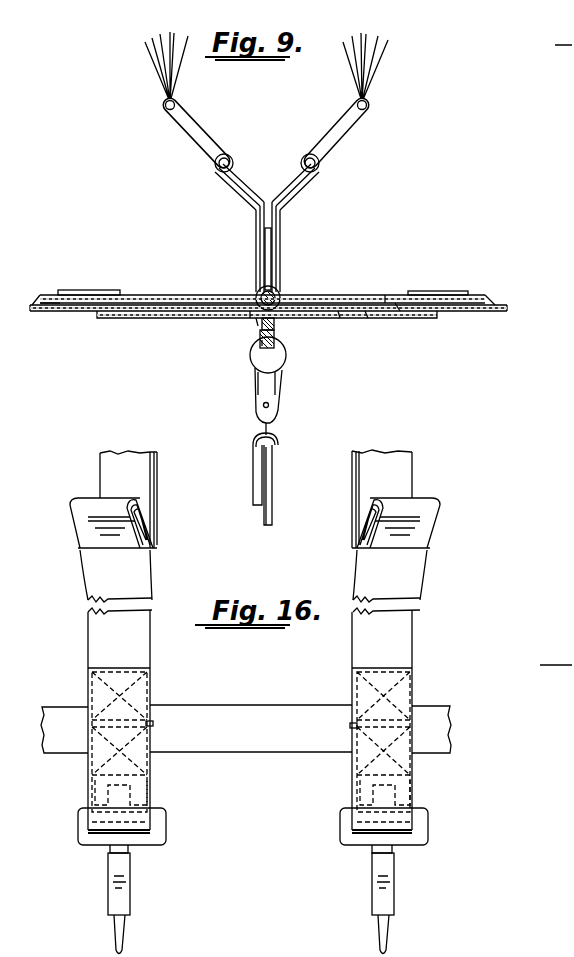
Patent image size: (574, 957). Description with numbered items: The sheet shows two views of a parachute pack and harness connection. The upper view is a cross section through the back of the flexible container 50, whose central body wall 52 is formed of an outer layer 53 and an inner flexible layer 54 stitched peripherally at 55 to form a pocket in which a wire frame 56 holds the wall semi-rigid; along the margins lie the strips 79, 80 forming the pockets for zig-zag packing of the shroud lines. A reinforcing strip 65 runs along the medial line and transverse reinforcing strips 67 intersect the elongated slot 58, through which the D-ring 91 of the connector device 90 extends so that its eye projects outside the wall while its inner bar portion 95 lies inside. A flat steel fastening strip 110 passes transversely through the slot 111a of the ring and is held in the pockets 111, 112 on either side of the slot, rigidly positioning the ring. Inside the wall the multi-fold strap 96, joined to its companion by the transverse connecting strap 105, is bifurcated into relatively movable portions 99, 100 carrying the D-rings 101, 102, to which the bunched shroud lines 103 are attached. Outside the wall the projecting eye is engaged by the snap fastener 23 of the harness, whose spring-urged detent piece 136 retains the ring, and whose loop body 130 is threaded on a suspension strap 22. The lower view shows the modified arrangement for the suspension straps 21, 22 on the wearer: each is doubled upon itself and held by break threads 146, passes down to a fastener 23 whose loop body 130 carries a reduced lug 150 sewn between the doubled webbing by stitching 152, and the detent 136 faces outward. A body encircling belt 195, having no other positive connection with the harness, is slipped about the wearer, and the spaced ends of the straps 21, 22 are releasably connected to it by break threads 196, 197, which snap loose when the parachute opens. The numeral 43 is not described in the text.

In FIG. 9, the shroud lines 103 is at (160, 62).
In FIG. 9, the D-ring 102 is at (197, 135).
In FIG. 9, the D-ring 101 is at (340, 132).
In FIG. 9, the relatively movable portion 100 is at (233, 180).
In FIG. 9, the relatively movable portion 99 is at (305, 178).
In FIG. 9, the multi-fold strap 96 is at (281, 218).
In FIG. 9, the connector device 90 is at (250, 243).
In FIG. 9, the transverse connecting strap 105 is at (272, 256).
In FIG. 9, the inner bar portion 95 is at (278, 292).
In FIG. 9, the strip of flexible material 79 is at (114, 292).
In FIG. 9, the strip of flexible material 80 is at (462, 291).
In FIG. 9, the inner flexible layer 54 is at (362, 295).
In FIG. 9, the flexible container 50 is at (462, 316).
In FIG. 9, the pocket 112 is at (124, 318).
In FIG. 9, the peripheral stitching 55 is at (42, 300).
In FIG. 9, the transverse reinforcing strip 67 is at (390, 300).
In FIG. 9, the wire frame 56 is at (400, 304).
In FIG. 9, the outer layer 53 is at (370, 318).
In FIG. 9, the pocket 111 is at (341, 318).
In FIG. 9, the body wall 52 is at (60, 322).
In FIG. 9, the reinforcing strip 65 is at (252, 322).
In FIG. 9, the steel fastening strip 110 is at (260, 326).
In FIG. 9, the slot of D-ring 111a is at (263, 346).
In FIG. 9, the elongated slot 58 is at (276, 326).
In FIG. 9, the D-ring 91 is at (286, 335).
In FIG. 9, the ring 43 is at (286, 352).
In FIG. 9, the snap fastener 23 is at (293, 379).
In FIG. 16, the snap fastener 23 is at (357, 851).
In FIG. 9, the detent piece 136 is at (262, 388).
In FIG. 16, the detent piece 136 is at (122, 893).
In FIG. 9, the suspension strap 22 is at (270, 490).
In FIG. 16, the suspension strap 22 is at (414, 465).
In FIG. 16, the suspension strap 21 is at (158, 463).
In FIG. 16, the break threads 146 is at (90, 552).
In FIG. 16, the body encircling belt 195 is at (258, 752).
In FIG. 16, the stitching 152 is at (92, 782).
In FIG. 16, the reduced lug 150 is at (140, 792).
In FIG. 16, the break thread 196 is at (154, 723).
In FIG. 16, the break thread 197 is at (350, 728).
In FIG. 16, the loop body 130 is at (84, 836).